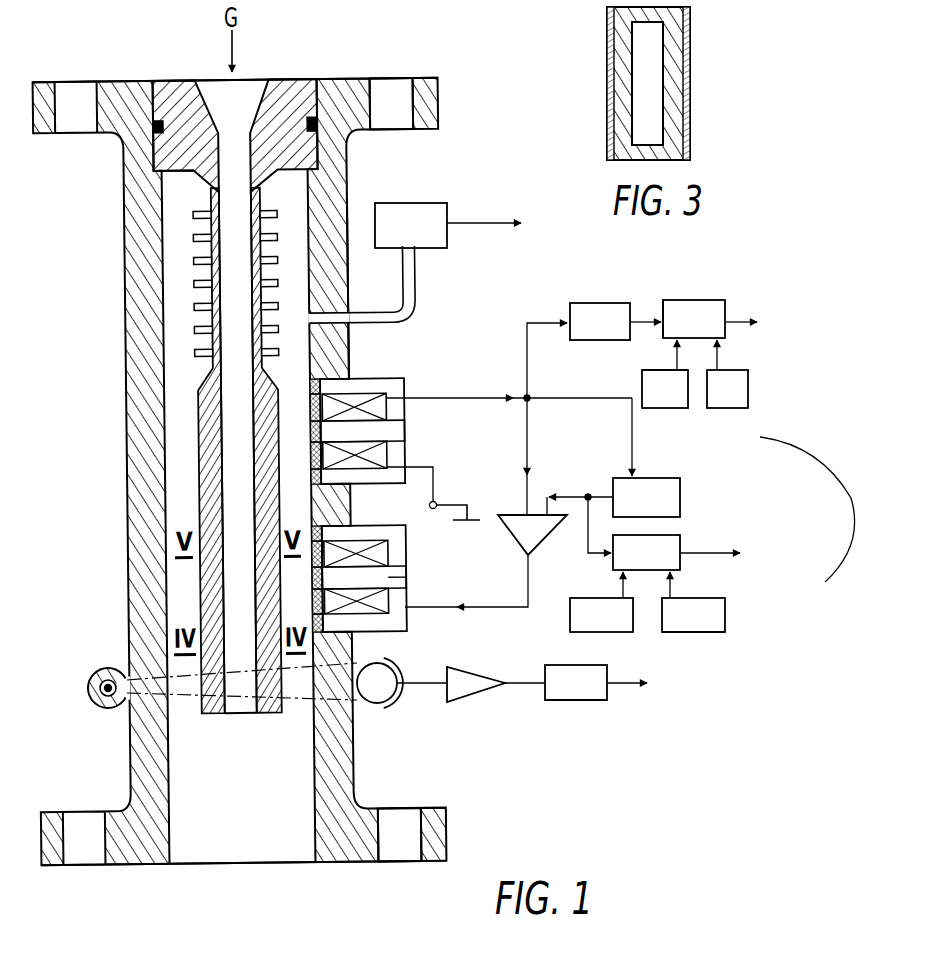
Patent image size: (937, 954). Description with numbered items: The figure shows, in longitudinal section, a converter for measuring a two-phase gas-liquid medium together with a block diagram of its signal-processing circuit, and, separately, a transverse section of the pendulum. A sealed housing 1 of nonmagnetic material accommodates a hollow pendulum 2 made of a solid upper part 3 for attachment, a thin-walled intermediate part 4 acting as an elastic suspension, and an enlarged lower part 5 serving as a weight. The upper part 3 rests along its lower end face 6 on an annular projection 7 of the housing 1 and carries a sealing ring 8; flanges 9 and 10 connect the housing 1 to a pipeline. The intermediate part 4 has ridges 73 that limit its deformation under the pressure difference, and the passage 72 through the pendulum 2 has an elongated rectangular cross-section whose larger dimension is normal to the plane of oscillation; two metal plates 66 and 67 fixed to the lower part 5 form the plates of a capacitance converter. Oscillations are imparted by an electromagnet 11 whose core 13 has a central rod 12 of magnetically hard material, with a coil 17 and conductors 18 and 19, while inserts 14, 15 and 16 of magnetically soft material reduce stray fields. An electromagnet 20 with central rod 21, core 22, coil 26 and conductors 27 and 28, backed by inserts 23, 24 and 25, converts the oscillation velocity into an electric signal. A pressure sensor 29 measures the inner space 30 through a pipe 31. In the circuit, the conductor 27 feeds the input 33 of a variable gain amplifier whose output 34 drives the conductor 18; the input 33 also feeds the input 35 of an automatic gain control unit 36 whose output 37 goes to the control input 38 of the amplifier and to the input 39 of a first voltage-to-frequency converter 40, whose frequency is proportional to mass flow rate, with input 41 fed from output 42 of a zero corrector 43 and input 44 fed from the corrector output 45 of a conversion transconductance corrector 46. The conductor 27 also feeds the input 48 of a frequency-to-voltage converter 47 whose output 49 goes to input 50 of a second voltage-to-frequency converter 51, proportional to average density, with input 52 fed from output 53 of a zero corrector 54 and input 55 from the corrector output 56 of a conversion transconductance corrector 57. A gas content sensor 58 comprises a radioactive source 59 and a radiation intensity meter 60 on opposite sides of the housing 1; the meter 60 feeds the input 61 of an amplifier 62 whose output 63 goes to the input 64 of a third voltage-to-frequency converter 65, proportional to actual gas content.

In FIG. 1, the sealed housing 1 is at (239, 466).
In FIG. 1, the hollow pendulum 2 is at (185, 451).
In FIG. 1, the solid upper part 3 is at (289, 94).
In FIG. 1, the thin-walled intermediate part 4 is at (196, 220).
In FIG. 1, the enlarged lower part 5 is at (210, 487).
In FIG. 3, the enlarged lower part 5 is at (644, 83).
In FIG. 1, the lower end face 6 is at (167, 173).
In FIG. 1, the annular projection 7 is at (157, 178).
In FIG. 1, the sealing ring 8 is at (320, 133).
In FIG. 1, the upper flange 9 is at (426, 84).
In FIG. 1, the lower flange 10 is at (428, 845).
In FIG. 1, the electromagnet 11 is at (384, 579).
In FIG. 1, the central rod 12 is at (399, 578).
In FIG. 1, the core 13 is at (398, 604).
In FIG. 1, the insert 14 is at (311, 532).
In FIG. 1, the insert 15 is at (311, 577).
In FIG. 1, the insert 16 is at (313, 622).
In FIG. 1, the coil 17 is at (362, 570).
In FIG. 1, the conductor 18 is at (420, 612).
In FIG. 1, the conductor 19 is at (403, 556).
In FIG. 1, the electromagnet 20 is at (392, 424).
In FIG. 1, the central rod 21 is at (383, 419).
In FIG. 1, the core 22 is at (397, 453).
In FIG. 1, the insert 23 is at (313, 387).
In FIG. 1, the insert 24 is at (311, 430).
In FIG. 1, the insert 25 is at (311, 476).
In FIG. 1, the coil 26 is at (335, 381).
In FIG. 1, the conductor 27 is at (405, 399).
In FIG. 1, the conductor 28 is at (433, 471).
In FIG. 1, the pressure sensor 29 is at (430, 216).
In FIG. 1, the inner space 30 is at (305, 192).
In FIG. 1, the pipe 31 is at (417, 277).
In FIG. 1, the input 33 is at (529, 470).
In FIG. 1, the output 34 is at (526, 554).
In FIG. 1, the input 35 is at (636, 478).
In FIG. 1, the automatic gain control unit 36 is at (705, 482).
In FIG. 1, the output 37 is at (607, 478).
In FIG. 1, the control input 38 is at (574, 492).
In FIG. 1, the input 39 is at (597, 553).
In FIG. 1, the first voltage-to-frequency converter 40 is at (681, 548).
In FIG. 1, the input 41 is at (626, 581).
In FIG. 1, the output 42 is at (612, 602).
In FIG. 1, the zero corrector 43 is at (616, 632).
In FIG. 1, the input 44 is at (673, 578).
In FIG. 1, the conversion transconductance corrector 45 is at (751, 619).
In FIG. 1, the conversion transconductance corrector 46 is at (702, 632).
In FIG. 1, the frequency-to-voltage converter 47 is at (597, 312).
In FIG. 1, the input 48 is at (563, 322).
In FIG. 1, the output 49 is at (640, 320).
In FIG. 1, the input 50 is at (664, 315).
In FIG. 1, the second voltage-to-frequency converter 51 is at (754, 295).
In FIG. 1, the input 52 is at (672, 341).
In FIG. 1, the output 53 is at (676, 360).
In FIG. 1, the zero corrector 54 is at (660, 395).
In FIG. 1, the input 55 is at (718, 338).
In FIG. 1, the correction unit 56 is at (723, 369).
In FIG. 1, the conversion transconductance corrector 57 is at (795, 501).
In FIG. 1, the sensor 58 is at (202, 712).
In FIG. 1, the radioactive source 59 is at (92, 688).
In FIG. 1, the radiation intensity meter 60 is at (389, 706).
In FIG. 1, the input 61 is at (433, 687).
In FIG. 1, the amplifier 62 is at (472, 698).
In FIG. 1, the output 63 is at (508, 683).
In FIG. 1, the input 64 is at (545, 688).
In FIG. 1, the third voltage-to-frequency converter 65 is at (581, 702).
In FIG. 3, the metal plate 66 is at (612, 67).
In FIG. 3, the metal plate 67 is at (690, 85).
In FIG. 1, the passage 72 is at (236, 600).
In FIG. 3, the passage 72 is at (642, 132).
In FIG. 1, the ridges 73 is at (279, 261).